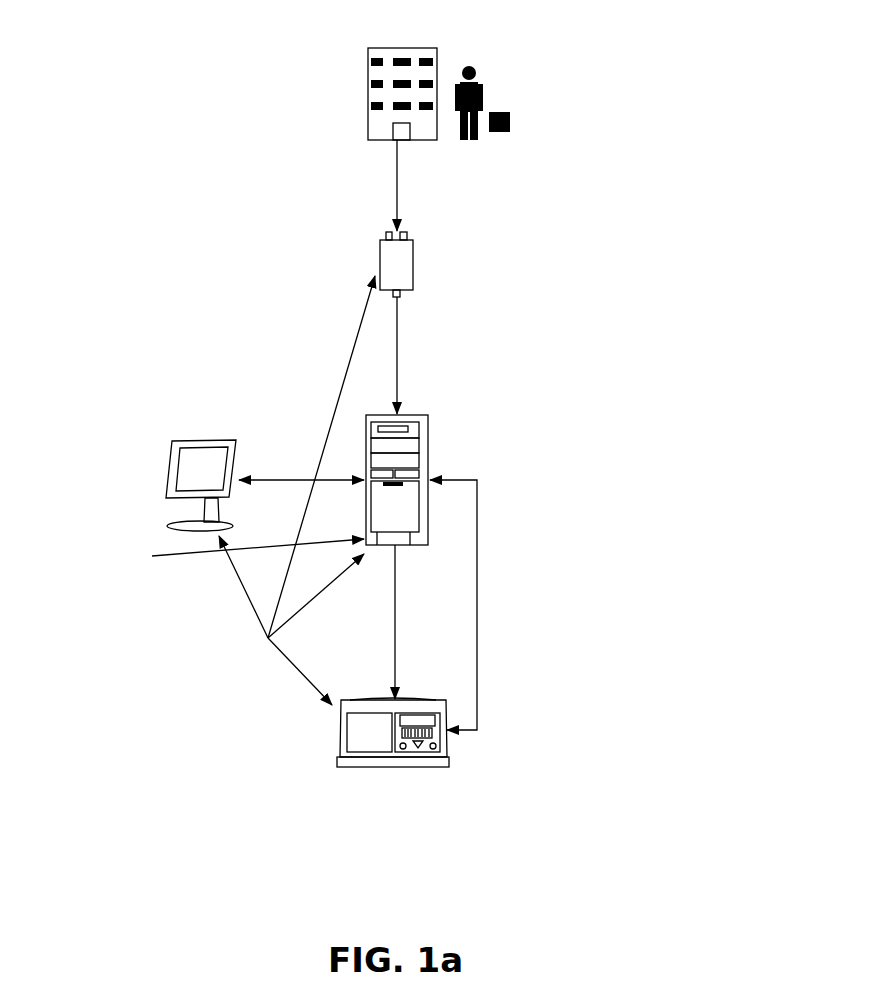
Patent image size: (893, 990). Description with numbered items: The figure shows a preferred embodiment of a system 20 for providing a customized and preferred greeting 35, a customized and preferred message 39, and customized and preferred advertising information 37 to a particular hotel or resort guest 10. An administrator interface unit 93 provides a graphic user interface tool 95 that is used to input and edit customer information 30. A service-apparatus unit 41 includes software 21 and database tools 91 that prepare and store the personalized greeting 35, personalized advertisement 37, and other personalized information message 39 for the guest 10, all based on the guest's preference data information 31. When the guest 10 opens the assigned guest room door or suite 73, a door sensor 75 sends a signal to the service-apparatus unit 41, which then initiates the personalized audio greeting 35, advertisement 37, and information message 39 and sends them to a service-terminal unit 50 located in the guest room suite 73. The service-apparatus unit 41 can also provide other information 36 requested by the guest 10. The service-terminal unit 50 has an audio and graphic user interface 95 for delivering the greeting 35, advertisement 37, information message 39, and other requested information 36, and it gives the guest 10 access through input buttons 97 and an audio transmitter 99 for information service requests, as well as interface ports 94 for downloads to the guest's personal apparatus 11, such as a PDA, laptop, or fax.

The guest room door/suite 73 is at (438, 56).
The guest 10 is at (469, 143).
The personal apparatus 11 is at (512, 134).
The door sensor 75 is at (418, 275).
The service-apparatus unit 41 is at (437, 420).
The administrator interface unit 93 is at (166, 455).
The system 20 is at (297, 490).
The personalized greeting 35 is at (238, 558).
The software 21 is at (89, 570).
The database tools 91 is at (157, 590).
The other information 36 is at (120, 600).
The preference data information 31 is at (82, 607).
The graphic user interface 95 is at (147, 632).
The personalized advertisement 37 is at (105, 640).
The customer information 30 is at (135, 670).
The information message 39 is at (97, 682).
The service-terminal unit 50 is at (390, 769).
The interface ports 94 is at (332, 740).
The input buttons 97 is at (295, 833).
The audio transmitter 99 is at (262, 857).